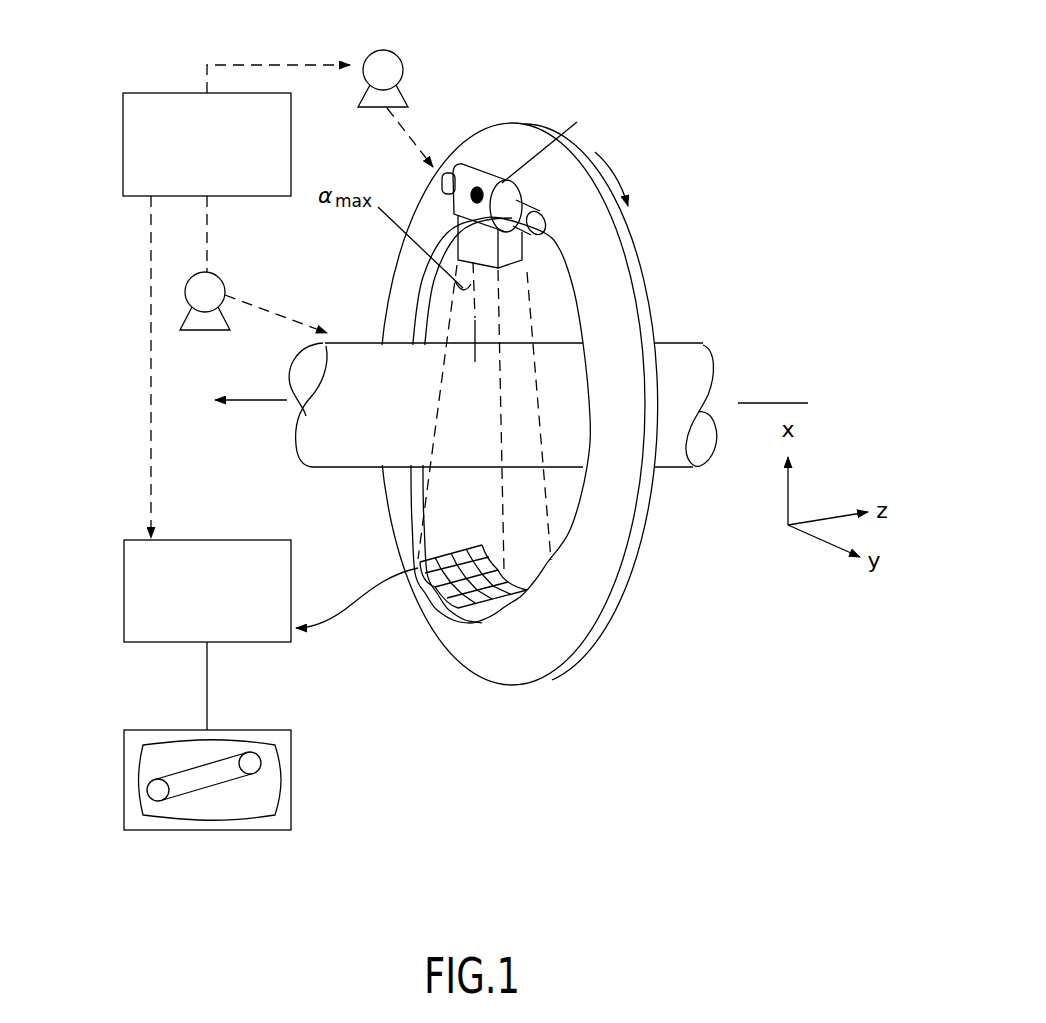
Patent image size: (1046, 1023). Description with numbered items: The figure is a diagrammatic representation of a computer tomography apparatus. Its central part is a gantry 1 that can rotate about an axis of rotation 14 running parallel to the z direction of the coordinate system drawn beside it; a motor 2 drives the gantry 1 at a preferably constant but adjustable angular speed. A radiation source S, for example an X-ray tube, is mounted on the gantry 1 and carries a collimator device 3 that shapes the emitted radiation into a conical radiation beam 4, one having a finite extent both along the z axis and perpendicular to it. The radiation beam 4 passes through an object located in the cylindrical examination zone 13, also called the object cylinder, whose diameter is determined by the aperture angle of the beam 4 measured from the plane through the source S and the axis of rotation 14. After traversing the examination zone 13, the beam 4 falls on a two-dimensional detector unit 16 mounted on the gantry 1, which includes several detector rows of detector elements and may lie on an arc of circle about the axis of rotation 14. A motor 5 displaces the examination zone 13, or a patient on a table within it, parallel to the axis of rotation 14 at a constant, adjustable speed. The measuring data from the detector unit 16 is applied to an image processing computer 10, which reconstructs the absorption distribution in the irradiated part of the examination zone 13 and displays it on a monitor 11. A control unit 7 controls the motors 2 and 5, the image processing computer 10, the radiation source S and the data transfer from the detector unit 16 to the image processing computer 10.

The gantry 1 is at (613, 533).
The motor 2 is at (403, 67).
The collimator device 3 is at (523, 253).
The radiation beam 4 is at (504, 482).
The motor 5 is at (220, 285).
The control unit 7 is at (165, 93).
The image processing computer 10 is at (170, 630).
The monitor 11 is at (292, 804).
The examination zone 13 is at (358, 360).
The axis of rotation 14 is at (253, 397).
The detector unit 16 is at (437, 610).